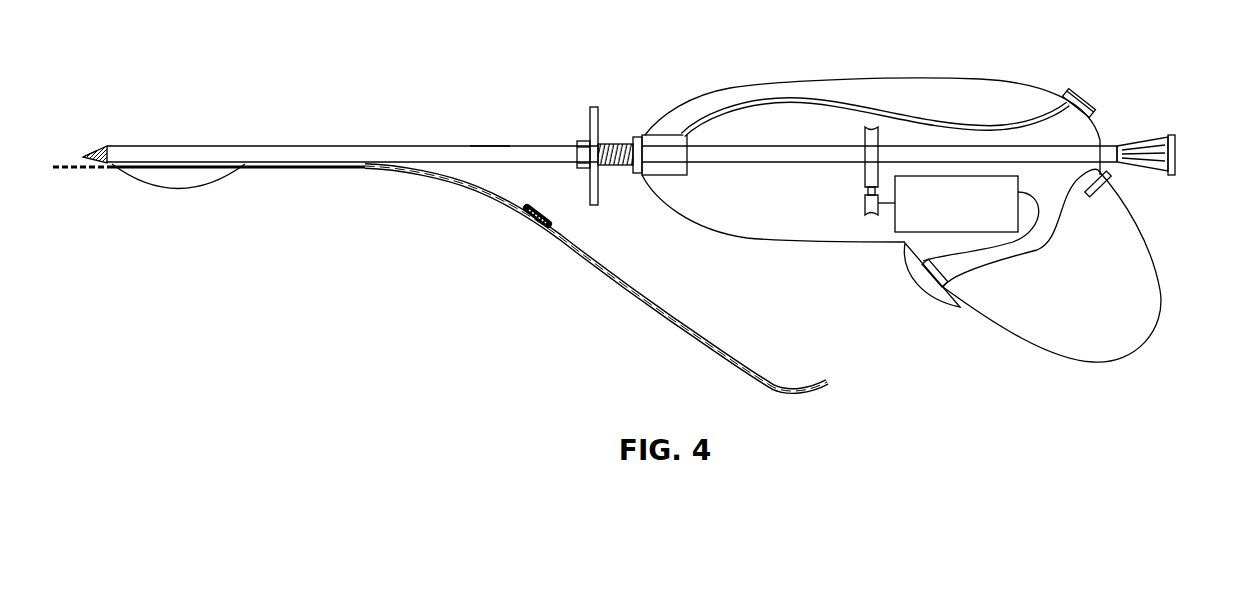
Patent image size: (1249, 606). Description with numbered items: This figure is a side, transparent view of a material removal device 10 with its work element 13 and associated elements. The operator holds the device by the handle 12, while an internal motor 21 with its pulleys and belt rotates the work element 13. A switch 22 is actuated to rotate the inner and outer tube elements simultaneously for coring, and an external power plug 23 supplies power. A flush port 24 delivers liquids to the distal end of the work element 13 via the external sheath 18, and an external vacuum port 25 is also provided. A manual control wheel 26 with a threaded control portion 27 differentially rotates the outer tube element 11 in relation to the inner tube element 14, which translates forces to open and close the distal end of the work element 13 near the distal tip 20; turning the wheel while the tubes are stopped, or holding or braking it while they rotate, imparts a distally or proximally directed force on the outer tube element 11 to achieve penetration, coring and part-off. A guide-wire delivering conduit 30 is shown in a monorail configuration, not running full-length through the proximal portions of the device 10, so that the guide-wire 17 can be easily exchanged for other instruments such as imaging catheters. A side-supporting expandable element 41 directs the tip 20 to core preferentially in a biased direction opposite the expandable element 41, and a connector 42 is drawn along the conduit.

The device 10 is at (940, 80).
The outer tube element 11 is at (103, 146).
The handle 12 is at (1165, 300).
The work element 13 is at (205, 146).
The inner tube element 14 is at (762, 146).
The guide-wire 17 is at (68, 170).
The external sheath 18 is at (490, 146).
The distal tip 20 is at (83, 157).
The internal motor 21 is at (893, 230).
The switch 22 is at (935, 306).
The external power plug 23 is at (1110, 186).
The flush port 24 is at (1082, 94).
The external vacuum port 25 is at (1178, 140).
The manual control wheel 26 is at (596, 107).
The threaded control portion 27 is at (620, 144).
The guide-wire delivering conduit 30 is at (325, 166).
The side-supporting expandable element 41 is at (155, 189).
The connector 42 is at (535, 226).